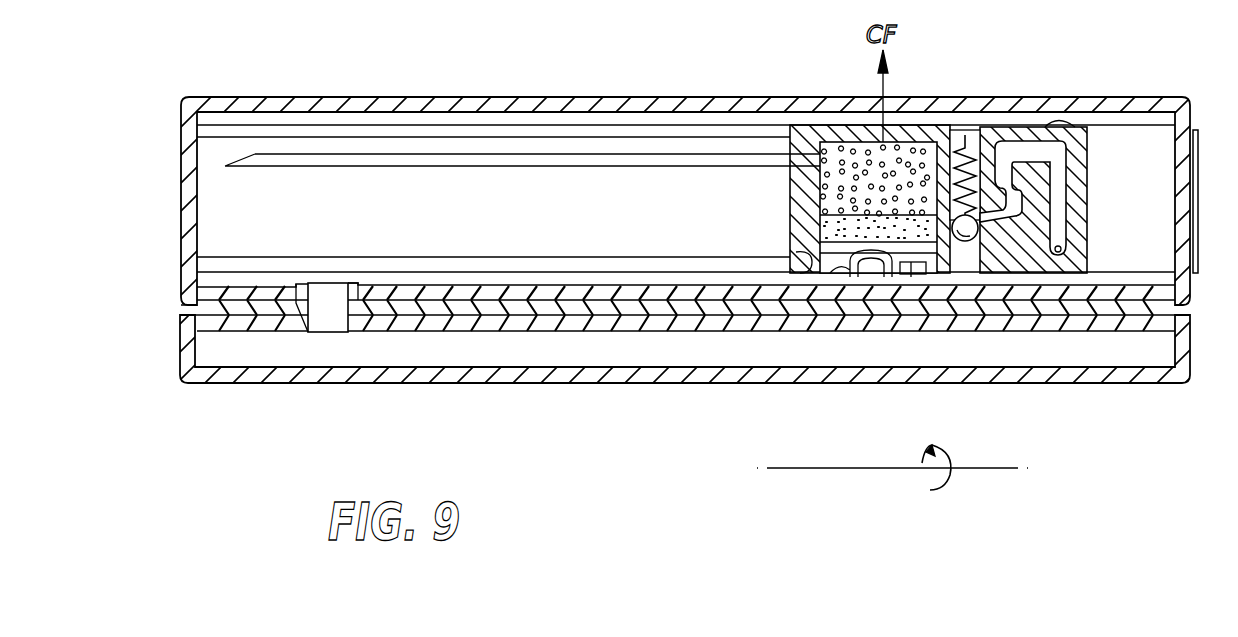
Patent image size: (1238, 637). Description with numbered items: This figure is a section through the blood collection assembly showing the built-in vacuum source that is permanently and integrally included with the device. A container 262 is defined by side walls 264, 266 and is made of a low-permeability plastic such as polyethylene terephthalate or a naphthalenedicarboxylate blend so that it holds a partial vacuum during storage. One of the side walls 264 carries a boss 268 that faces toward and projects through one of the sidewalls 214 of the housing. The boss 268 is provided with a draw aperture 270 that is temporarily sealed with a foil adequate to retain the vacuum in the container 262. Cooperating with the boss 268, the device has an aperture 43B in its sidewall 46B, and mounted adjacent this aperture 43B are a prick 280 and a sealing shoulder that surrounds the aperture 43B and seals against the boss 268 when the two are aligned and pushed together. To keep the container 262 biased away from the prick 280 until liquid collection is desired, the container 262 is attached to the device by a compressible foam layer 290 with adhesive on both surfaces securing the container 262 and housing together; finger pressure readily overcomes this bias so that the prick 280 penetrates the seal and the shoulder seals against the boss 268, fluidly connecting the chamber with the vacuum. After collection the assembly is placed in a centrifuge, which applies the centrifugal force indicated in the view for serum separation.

The sidewall of housing 214 is at (553, 287).
The container 262 is at (562, 361).
The side wall 264 is at (648, 383).
The side wall 266 is at (183, 352).
The boss 268 is at (358, 284).
The draw aperture 270 is at (320, 287).
The prick 280 is at (903, 270).
The compressible foam layer 290 is at (185, 310).
The aperture 43B is at (852, 262).
The sidewall of device 46B is at (790, 253).